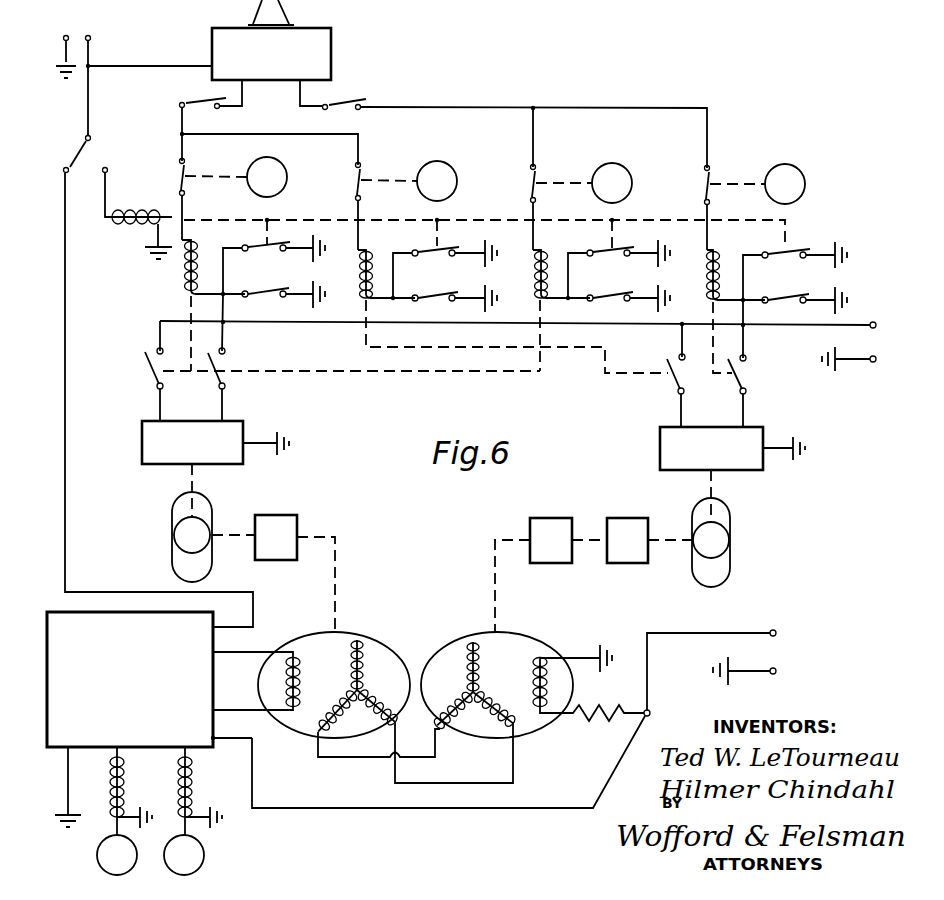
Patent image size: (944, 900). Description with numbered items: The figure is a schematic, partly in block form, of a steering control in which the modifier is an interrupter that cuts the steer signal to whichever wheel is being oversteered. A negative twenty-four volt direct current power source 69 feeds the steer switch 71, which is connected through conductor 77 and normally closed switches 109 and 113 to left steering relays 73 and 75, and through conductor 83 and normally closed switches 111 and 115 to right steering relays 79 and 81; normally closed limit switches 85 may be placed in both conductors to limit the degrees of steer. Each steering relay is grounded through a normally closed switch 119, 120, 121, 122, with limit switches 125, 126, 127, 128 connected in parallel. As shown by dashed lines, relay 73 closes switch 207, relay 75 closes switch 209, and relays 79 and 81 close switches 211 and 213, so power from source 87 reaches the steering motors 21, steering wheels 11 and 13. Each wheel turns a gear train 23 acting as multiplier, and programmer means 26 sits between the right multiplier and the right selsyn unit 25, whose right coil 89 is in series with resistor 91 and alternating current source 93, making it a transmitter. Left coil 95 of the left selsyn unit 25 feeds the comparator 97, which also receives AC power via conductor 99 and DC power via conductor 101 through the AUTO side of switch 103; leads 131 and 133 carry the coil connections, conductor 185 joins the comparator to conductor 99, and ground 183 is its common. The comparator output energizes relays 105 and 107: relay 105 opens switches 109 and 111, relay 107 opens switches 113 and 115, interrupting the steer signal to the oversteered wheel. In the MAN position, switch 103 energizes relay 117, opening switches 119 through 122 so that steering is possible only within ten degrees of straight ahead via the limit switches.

The steerable wheel 11 is at (730, 563).
The steerable wheel 13 is at (172, 512).
The steering motor 21 is at (142, 447).
The gear train 23 is at (297, 515).
The selsyn unit 25 is at (362, 633).
The programmer means 26 is at (551, 563).
The power source 69 is at (92, 37).
The steer switch 71 is at (331, 48).
The left steering relay 73 is at (184, 274).
The left steering relay 75 is at (358, 272).
The conductor 77 is at (182, 118).
The right steering relay 79 is at (533, 272).
The right steering relay 81 is at (706, 277).
The conductor 83 is at (463, 108).
The limit switch 85 is at (347, 101).
The power source 87 is at (884, 343).
The right coil 89 is at (532, 681).
The resistor 91 is at (592, 718).
The AC power source 93 is at (786, 652).
The left coil 95 is at (302, 682).
The comparator 97 is at (98, 612).
The conductor 99 is at (394, 808).
The conductor 101 is at (65, 396).
The switch 103 is at (82, 149).
The relay 105 is at (125, 791).
The relay 107 is at (193, 791).
The normally closed switch 109 is at (187, 187).
The normally closed switch 111 is at (712, 194).
The normally closed switch 113 is at (363, 191).
The normally closed switch 115 is at (538, 193).
The relay 117 is at (134, 210).
The normally closed switch 119 is at (278, 251).
The normally closed switch 120 is at (448, 254).
The normally closed switch 121 is at (626, 254).
The normally closed switch 122 is at (801, 256).
The limit switch 125 is at (266, 297).
The limit switch 126 is at (438, 300).
The limit switch 127 is at (611, 300).
The limit switch 128 is at (786, 302).
The conductor 131 is at (253, 652).
The conductor 133 is at (237, 710).
The ground connection 183 is at (103, 757).
The conductor 185 is at (163, 749).
The switch 207 is at (165, 373).
The switch 209 is at (678, 392).
The switch 211 is at (226, 374).
The switch 213 is at (745, 378).